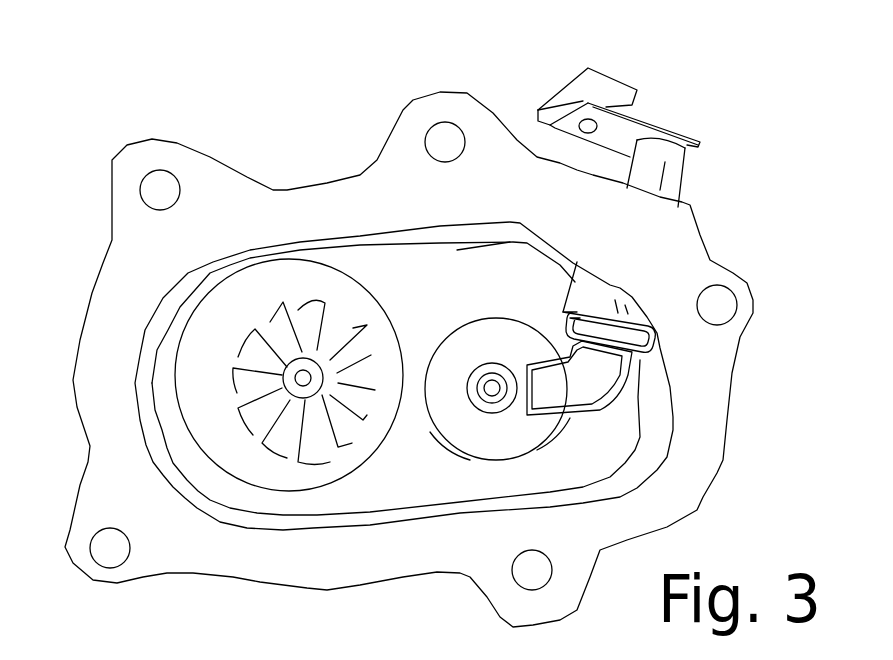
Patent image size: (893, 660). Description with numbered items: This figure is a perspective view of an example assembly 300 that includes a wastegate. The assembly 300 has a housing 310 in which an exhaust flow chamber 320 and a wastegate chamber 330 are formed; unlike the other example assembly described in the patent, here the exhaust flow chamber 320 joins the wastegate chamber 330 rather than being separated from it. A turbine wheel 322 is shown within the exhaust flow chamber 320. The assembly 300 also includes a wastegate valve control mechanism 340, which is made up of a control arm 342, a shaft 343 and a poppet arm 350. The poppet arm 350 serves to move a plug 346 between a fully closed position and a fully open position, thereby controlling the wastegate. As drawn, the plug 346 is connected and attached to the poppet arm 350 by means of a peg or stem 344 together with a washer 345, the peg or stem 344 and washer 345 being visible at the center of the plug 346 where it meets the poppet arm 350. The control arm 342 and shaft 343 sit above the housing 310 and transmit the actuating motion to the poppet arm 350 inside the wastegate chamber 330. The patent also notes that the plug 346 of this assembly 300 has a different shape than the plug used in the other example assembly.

The assembly 300 is at (113, 105).
The housing 310 is at (222, 165).
The exhaust flow chamber 320 is at (226, 350).
The turbine wheel 322 is at (273, 318).
The wastegate chamber 330 is at (515, 286).
The wastegate valve control mechanism 340 is at (672, 83).
The control arm 342 is at (685, 137).
The shaft 343 is at (677, 172).
The peg or stem 344 is at (488, 395).
The washer 345 is at (489, 372).
The plug 346 is at (508, 450).
The poppet arm 350 is at (583, 387).